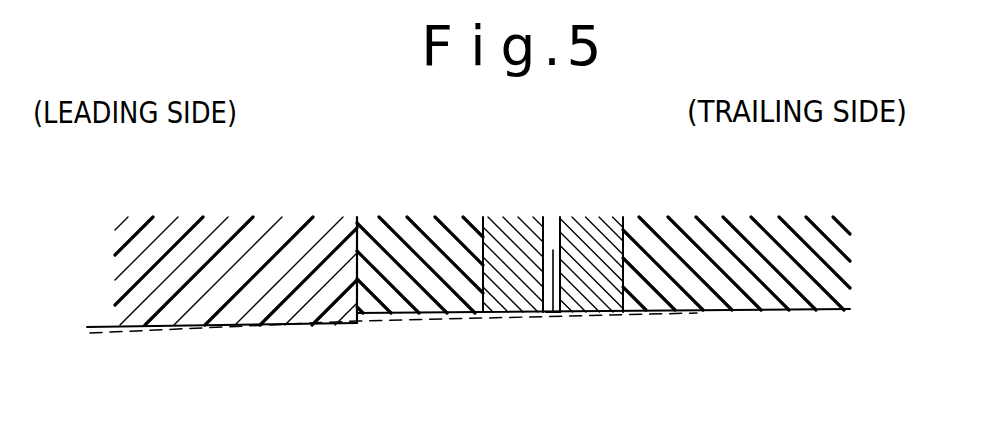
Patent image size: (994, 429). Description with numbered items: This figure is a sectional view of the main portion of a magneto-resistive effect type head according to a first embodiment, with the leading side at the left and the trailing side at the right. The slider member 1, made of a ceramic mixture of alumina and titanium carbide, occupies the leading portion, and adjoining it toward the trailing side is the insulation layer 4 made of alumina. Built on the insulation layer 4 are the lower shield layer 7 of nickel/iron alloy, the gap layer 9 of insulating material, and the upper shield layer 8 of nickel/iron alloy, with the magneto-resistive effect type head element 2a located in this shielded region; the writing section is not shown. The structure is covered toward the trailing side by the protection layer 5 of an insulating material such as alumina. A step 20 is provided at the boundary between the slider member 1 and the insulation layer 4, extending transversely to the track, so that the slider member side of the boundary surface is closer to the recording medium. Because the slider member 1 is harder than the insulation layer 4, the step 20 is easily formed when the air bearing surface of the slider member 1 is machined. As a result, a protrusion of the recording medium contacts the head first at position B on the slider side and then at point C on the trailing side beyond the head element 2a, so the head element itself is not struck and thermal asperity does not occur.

The slider member 1 is at (212, 218).
The insulation layer 4 is at (395, 218).
The lower shield layer 7 is at (513, 218).
The gap layer 9 is at (553, 218).
The upper shield layer 8 is at (597, 218).
The magneto-resistive effect type head element 2a is at (557, 267).
The protection layer 5 is at (745, 218).
The step 20 is at (358, 321).
The position B is at (333, 327).
The point C is at (723, 315).